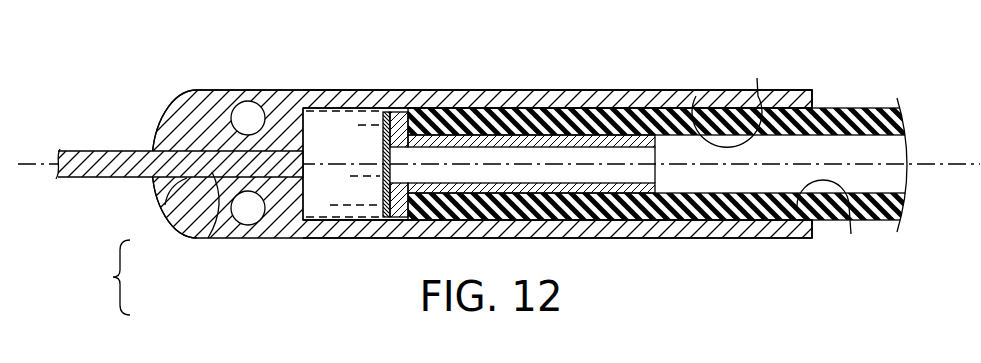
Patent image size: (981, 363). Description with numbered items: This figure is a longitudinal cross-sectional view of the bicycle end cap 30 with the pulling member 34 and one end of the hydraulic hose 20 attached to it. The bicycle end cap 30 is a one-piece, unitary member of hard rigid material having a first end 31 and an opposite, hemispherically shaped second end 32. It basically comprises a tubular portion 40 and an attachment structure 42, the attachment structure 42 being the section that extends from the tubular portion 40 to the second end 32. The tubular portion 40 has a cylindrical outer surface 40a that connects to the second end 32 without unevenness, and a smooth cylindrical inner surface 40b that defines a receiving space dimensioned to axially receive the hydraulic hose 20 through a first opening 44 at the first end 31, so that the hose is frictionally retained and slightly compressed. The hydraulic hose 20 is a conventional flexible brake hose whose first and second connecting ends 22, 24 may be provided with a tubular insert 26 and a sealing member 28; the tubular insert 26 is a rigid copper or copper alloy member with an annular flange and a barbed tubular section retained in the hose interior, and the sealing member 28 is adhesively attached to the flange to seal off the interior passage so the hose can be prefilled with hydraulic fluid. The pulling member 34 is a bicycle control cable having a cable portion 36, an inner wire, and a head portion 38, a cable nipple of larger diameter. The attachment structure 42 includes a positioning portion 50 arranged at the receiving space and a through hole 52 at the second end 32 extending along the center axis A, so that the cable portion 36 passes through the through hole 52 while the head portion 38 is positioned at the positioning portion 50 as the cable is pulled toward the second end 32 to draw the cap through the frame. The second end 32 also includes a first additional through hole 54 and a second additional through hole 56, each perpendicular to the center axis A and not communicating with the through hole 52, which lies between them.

The hydraulic hose 20 is at (658, 158).
The first connecting end 22 is at (658, 192).
The second connecting end 24 is at (543, 213).
The tubular insert 26 is at (457, 140).
The sealing member 28 is at (383, 186).
The bicycle end cap 30 is at (426, 162).
The first end 31 is at (812, 100).
The second end 32 is at (165, 115).
The pulling member 34 is at (241, 243).
The cable portion 36 is at (208, 238).
The head portion 38 is at (330, 224).
The tubular portion 40 is at (570, 126).
The cylindrical outer surface 40a is at (668, 90).
The inner surface 40b is at (738, 101).
The attachment structure 42 is at (283, 84).
The first opening 44 is at (832, 220).
The positioning portion 50 is at (305, 135).
The through hole 52 is at (165, 205).
The first additional through hole 54 is at (247, 118).
The second additional through hole 56 is at (245, 212).
The center axis A is at (42, 162).